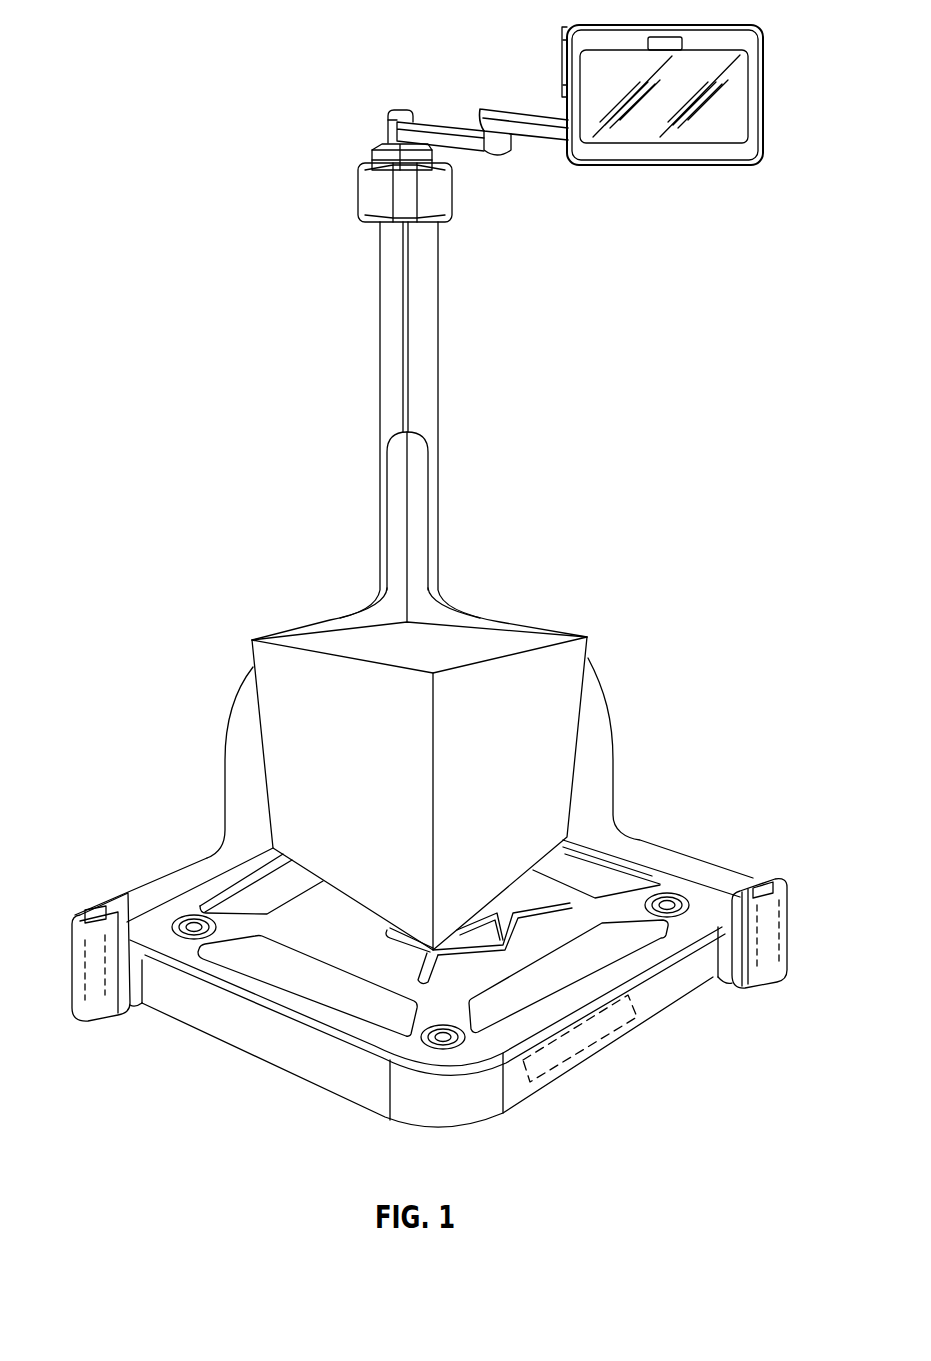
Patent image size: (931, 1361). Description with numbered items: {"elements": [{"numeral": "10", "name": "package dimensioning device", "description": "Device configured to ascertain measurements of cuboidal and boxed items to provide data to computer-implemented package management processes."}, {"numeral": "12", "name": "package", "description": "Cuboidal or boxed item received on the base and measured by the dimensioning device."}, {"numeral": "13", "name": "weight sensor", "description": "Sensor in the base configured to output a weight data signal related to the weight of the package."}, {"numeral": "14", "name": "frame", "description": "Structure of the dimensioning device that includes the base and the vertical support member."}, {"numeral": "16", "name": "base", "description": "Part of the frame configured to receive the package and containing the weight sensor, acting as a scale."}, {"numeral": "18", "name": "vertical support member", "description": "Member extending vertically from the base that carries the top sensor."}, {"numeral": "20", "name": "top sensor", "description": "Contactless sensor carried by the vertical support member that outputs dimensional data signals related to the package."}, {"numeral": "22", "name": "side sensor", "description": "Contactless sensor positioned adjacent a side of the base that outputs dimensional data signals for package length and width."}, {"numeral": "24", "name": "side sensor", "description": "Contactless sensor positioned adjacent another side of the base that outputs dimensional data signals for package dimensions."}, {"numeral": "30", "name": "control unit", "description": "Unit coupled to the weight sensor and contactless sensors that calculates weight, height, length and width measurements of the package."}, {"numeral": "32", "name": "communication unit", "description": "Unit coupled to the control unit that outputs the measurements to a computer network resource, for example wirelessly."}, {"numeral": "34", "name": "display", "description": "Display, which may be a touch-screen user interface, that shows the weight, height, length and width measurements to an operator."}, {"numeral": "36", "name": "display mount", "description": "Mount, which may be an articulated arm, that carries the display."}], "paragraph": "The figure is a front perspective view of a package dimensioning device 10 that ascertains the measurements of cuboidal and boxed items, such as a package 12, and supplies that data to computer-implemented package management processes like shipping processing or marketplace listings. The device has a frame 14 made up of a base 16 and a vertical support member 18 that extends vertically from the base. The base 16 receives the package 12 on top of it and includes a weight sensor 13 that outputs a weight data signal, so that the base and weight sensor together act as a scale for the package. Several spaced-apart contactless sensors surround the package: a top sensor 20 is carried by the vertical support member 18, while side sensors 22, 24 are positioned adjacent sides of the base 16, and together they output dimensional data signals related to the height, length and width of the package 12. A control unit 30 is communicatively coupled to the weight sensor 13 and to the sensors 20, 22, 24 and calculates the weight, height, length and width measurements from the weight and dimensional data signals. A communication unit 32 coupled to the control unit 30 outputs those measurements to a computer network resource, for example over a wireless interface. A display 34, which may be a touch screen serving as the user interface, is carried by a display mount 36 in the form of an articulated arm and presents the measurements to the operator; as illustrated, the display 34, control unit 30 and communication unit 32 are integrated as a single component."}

The three-dimensional scanning system 10 is at (163, 262).
The object to be scanned 12 is at (518, 654).
The hidden compartment 13 is at (570, 1052).
The housing 14 is at (206, 852).
The base 16 is at (254, 1016).
The post 18 is at (428, 292).
The camera head 20 is at (400, 198).
The left corner post 22 is at (93, 962).
The right corner post 24 is at (775, 935).
The monitor 30 is at (698, 95).
The monitor mount 32 is at (562, 72).
The display screen 34 is at (740, 120).
The support arm 36 is at (479, 110).